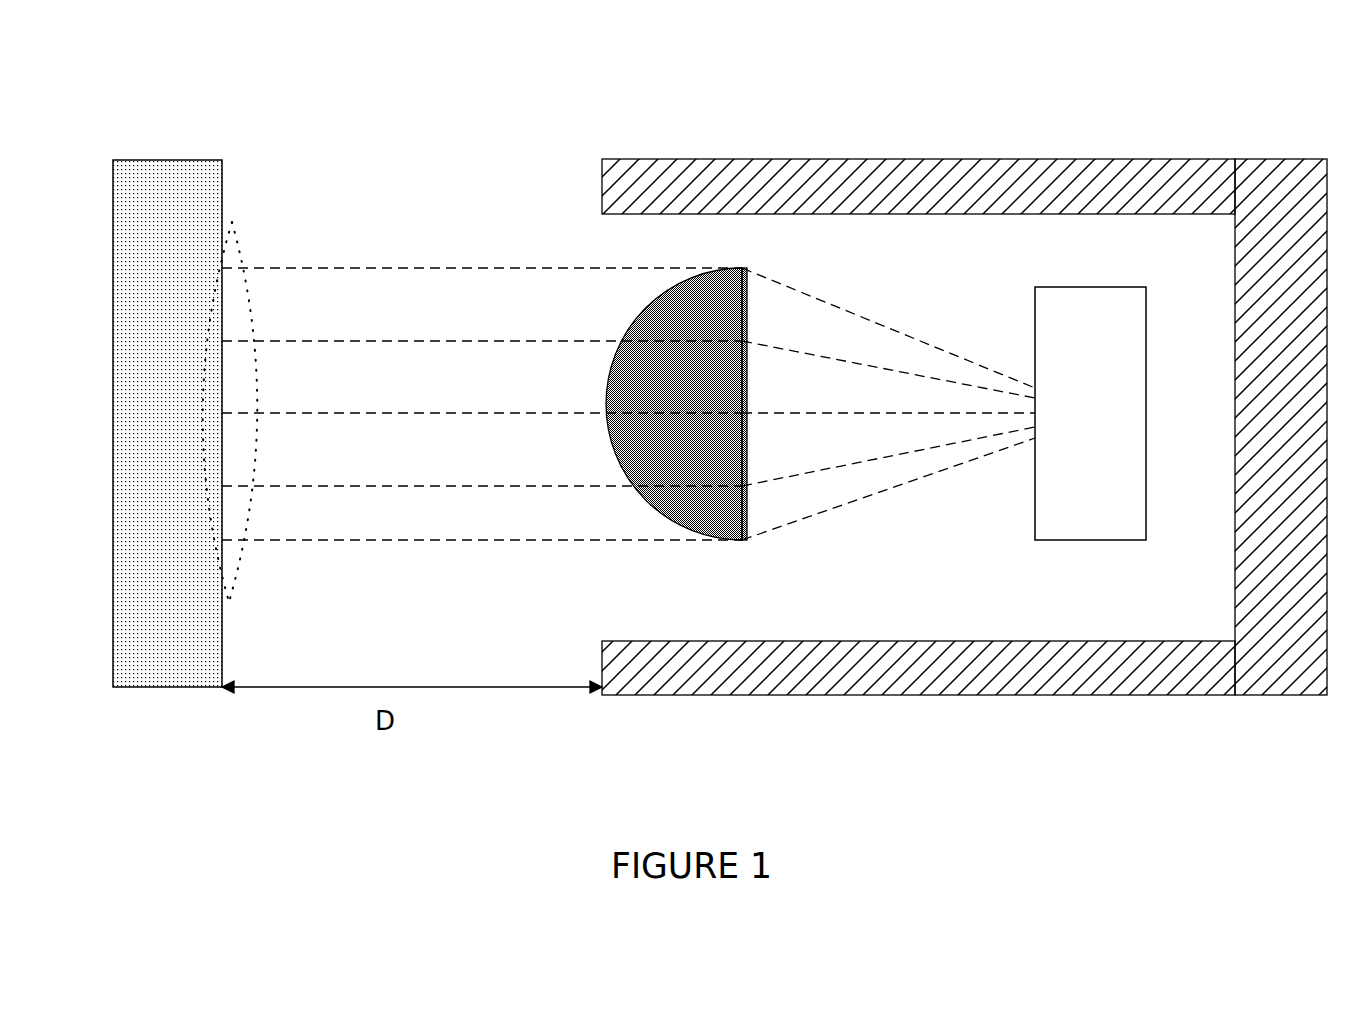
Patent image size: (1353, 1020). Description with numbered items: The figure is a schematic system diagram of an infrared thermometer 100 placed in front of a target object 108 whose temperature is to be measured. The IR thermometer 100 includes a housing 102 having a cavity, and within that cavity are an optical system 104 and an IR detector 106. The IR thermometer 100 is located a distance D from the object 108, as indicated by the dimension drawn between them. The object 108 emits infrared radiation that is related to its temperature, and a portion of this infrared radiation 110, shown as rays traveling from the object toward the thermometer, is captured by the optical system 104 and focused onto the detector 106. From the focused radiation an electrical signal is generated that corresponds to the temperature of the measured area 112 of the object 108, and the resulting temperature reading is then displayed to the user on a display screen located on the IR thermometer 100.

The infrared (IR) thermometer 100 is at (1328, 68).
The housing 102 is at (963, 697).
The optical system 104 is at (693, 503).
The IR detector 106 is at (1126, 542).
The target object 108 is at (167, 177).
The infrared radiation 110 is at (496, 267).
The measured area 112 is at (257, 317).